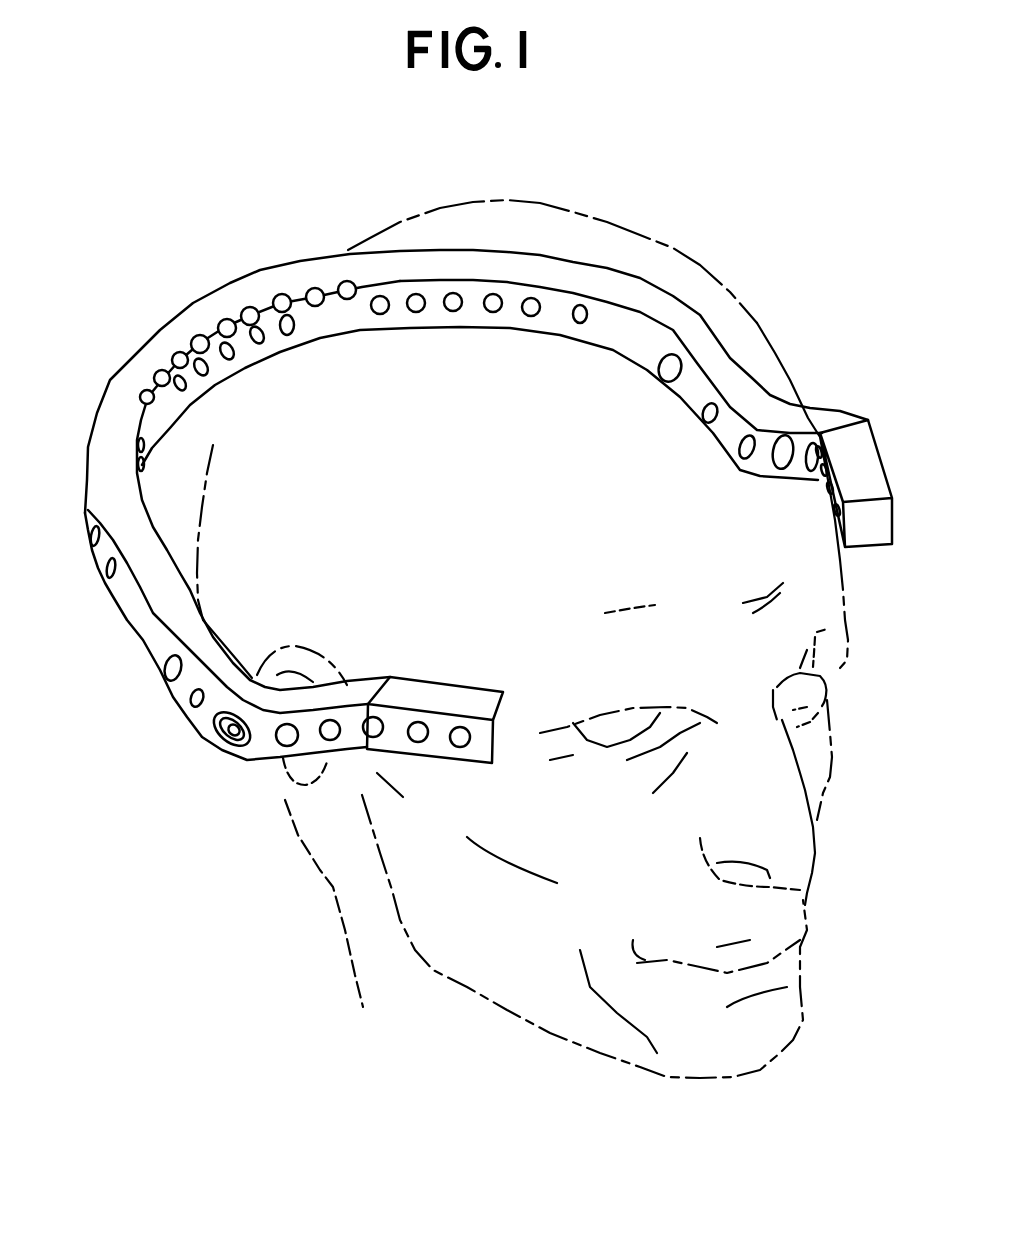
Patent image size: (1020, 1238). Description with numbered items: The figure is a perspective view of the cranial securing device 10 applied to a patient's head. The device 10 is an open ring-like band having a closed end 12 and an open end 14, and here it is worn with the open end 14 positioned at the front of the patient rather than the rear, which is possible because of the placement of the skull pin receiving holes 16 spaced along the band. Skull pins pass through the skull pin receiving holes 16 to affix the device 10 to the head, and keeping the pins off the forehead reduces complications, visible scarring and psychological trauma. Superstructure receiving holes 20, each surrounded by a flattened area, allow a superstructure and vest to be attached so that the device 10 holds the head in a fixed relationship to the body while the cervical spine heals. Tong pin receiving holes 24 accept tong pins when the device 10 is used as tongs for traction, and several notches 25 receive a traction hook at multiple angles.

The cranial securing device 10 is at (118, 410).
The closed end 12 is at (356, 250).
The open end 14 is at (875, 535).
The skull pin receiving holes 16 is at (150, 477).
The superstructure receiving holes 20 is at (738, 453).
The tong pin receiving holes 24 is at (661, 376).
The notches 25 is at (255, 312).